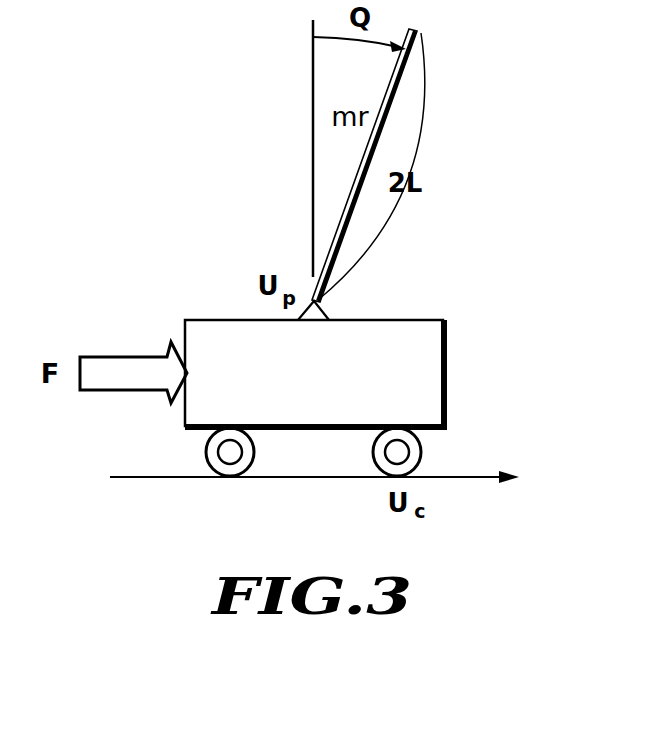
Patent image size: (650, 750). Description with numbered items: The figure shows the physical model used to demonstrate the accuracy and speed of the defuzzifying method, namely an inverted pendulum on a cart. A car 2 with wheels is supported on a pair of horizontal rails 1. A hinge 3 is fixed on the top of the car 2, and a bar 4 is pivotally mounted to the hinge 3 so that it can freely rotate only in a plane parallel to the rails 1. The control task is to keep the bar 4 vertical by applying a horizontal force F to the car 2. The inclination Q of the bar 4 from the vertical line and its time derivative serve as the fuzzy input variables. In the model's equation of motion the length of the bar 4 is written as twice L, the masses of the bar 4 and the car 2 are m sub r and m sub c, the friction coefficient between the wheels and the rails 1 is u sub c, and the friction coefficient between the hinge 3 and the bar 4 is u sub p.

The horizontal rails 1 is at (463, 477).
The car 2 is at (448, 385).
The hinge 3 is at (322, 306).
The bar 4 is at (405, 80).